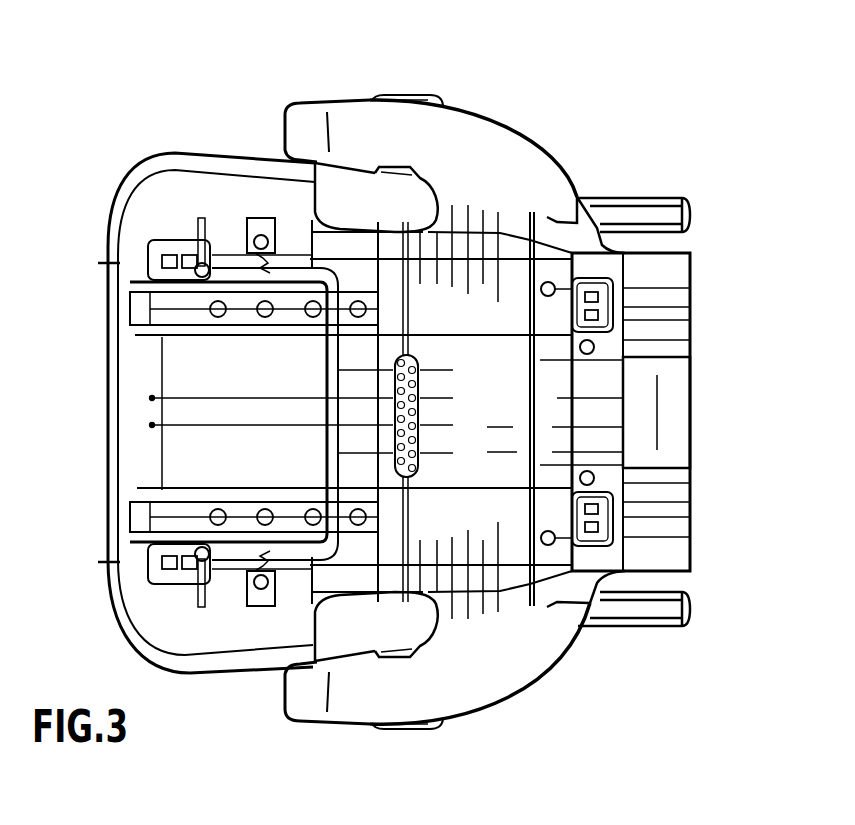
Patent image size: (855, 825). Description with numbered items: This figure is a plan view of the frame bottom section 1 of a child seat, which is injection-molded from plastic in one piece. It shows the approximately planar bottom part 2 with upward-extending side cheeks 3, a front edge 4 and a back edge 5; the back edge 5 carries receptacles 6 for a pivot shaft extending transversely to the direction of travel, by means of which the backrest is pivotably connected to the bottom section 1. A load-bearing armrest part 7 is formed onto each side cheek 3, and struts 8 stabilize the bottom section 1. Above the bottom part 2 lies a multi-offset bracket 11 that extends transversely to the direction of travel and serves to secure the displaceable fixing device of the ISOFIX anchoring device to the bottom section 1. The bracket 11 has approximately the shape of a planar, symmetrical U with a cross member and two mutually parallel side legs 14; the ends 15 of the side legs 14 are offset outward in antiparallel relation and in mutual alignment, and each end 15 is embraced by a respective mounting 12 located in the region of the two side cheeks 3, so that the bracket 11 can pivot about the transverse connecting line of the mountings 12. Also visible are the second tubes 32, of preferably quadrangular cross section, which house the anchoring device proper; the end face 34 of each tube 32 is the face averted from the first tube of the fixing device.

The frame bottom section 1 is at (86, 102).
The bottom part 2 is at (187, 453).
The side cheeks 3 is at (172, 160).
The front edge 4 is at (108, 400).
The back edge 5 is at (627, 387).
The receptacles 6 is at (683, 270).
The armrest part 7 is at (480, 135).
The struts 8 is at (548, 213).
The bracket 11 is at (330, 356).
The mountings 12 is at (261, 220).
The side legs 14 is at (292, 603).
The ends 15 is at (253, 252).
The second tube 32 is at (657, 212).
The end face 34 is at (693, 212).